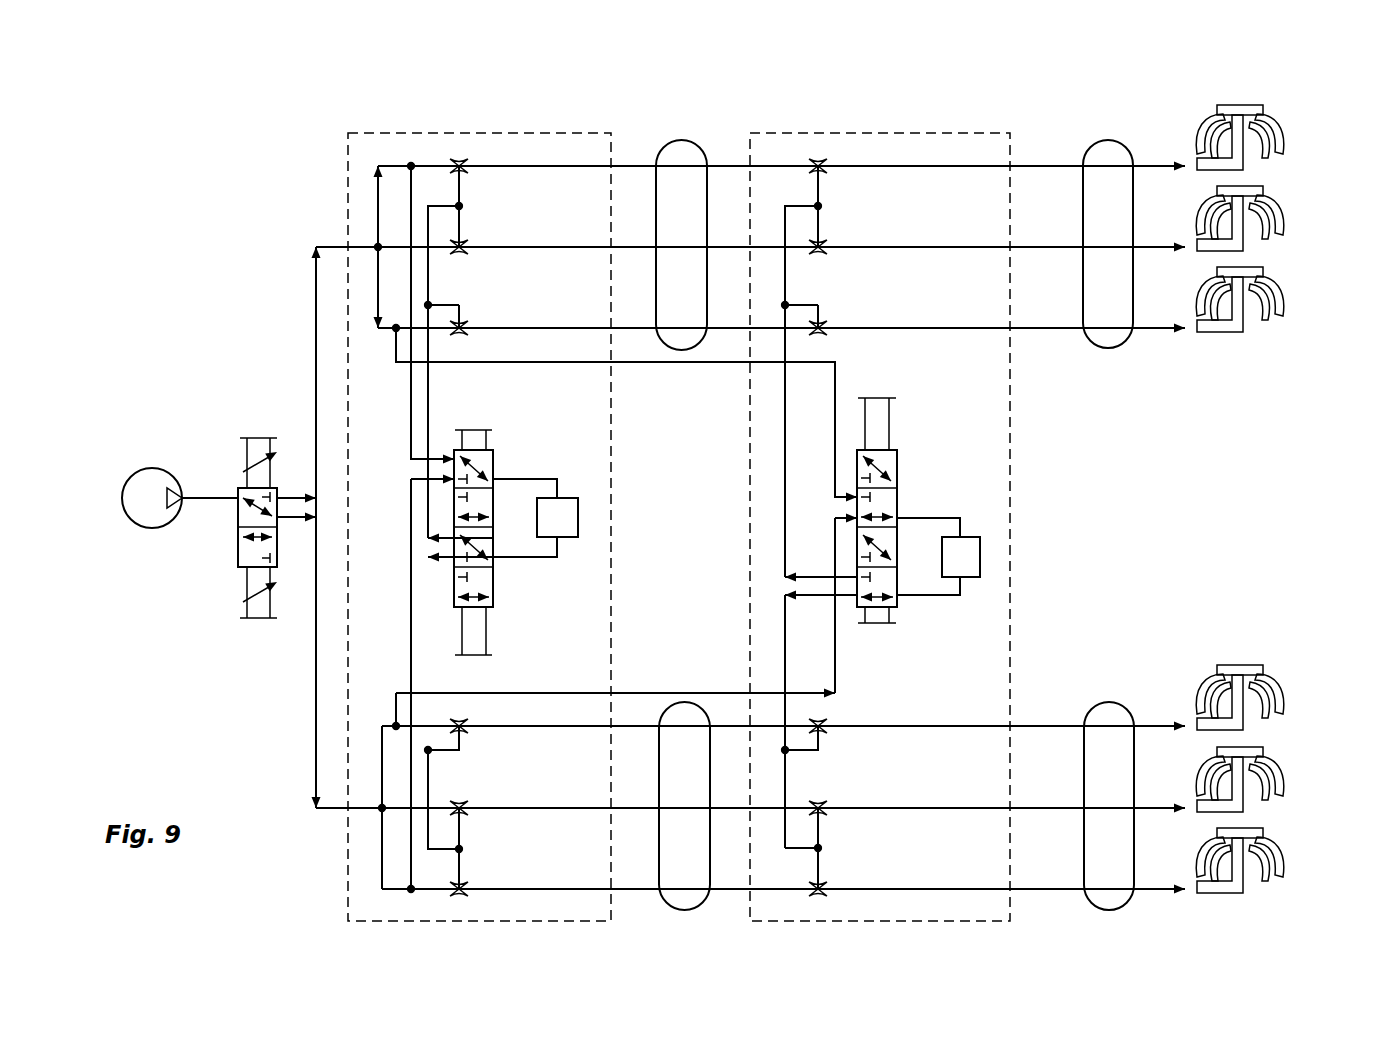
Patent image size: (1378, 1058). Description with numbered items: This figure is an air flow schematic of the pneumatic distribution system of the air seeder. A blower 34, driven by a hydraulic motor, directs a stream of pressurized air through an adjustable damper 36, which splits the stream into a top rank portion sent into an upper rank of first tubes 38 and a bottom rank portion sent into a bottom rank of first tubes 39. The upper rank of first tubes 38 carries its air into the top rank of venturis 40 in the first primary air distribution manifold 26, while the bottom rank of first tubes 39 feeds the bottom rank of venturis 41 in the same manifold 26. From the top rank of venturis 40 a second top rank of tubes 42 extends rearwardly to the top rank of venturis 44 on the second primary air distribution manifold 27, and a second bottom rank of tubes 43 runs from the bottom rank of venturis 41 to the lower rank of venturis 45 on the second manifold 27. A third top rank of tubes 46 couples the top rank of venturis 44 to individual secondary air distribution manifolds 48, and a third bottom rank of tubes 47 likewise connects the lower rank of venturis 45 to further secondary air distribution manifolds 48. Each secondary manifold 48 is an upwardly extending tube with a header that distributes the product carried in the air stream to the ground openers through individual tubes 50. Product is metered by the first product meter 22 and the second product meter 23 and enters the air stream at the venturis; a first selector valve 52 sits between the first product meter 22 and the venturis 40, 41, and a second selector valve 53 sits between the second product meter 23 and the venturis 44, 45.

The first product meter 22 is at (568, 540).
The second product meter 23 is at (970, 580).
The first primary air distribution manifold 26 is at (460, 133).
The second primary air distribution manifold 27 is at (954, 133).
The blower 34 is at (160, 468).
The adjustable damper 36 is at (260, 398).
The upper rank of first tubes 38 is at (392, 330).
The bottom rank of first tubes 39 is at (392, 727).
The top rank of venturis 40 is at (462, 176).
The bottom rank of venturis 41 is at (462, 735).
The second top rank of tubes 42 is at (695, 140).
The second bottom rank of tubes 43 is at (703, 910).
The top rank of venturis 44 is at (821, 176).
The lower rank of venturis 45 is at (821, 735).
The third top rank of tubes 46 is at (1110, 140).
The third bottom rank of tubes 47 is at (1106, 702).
The secondary air distribution manifold 48 is at (1247, 168).
The individual tubes 50 is at (1197, 140).
The first selector valve 52 is at (495, 456).
The second selector valve 53 is at (898, 456).